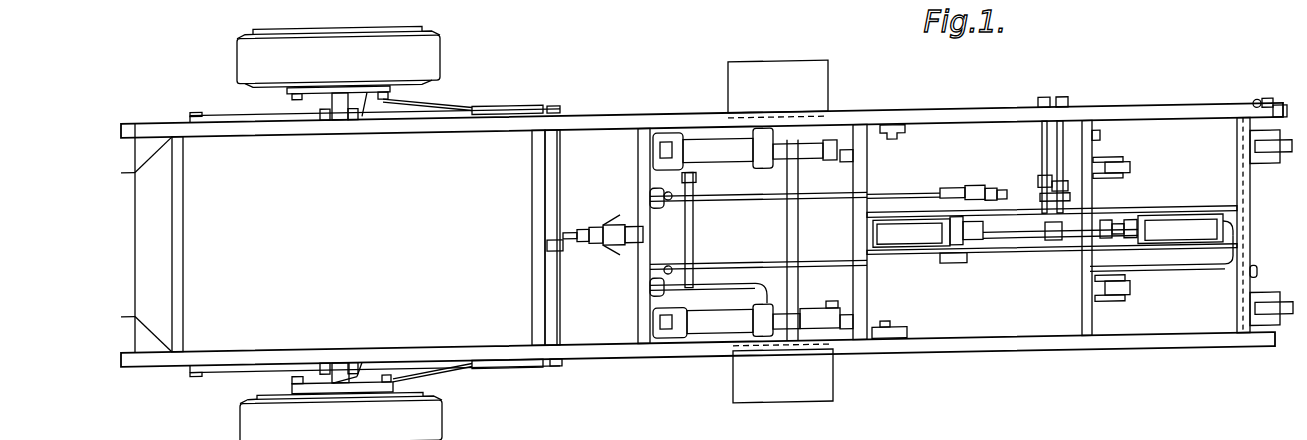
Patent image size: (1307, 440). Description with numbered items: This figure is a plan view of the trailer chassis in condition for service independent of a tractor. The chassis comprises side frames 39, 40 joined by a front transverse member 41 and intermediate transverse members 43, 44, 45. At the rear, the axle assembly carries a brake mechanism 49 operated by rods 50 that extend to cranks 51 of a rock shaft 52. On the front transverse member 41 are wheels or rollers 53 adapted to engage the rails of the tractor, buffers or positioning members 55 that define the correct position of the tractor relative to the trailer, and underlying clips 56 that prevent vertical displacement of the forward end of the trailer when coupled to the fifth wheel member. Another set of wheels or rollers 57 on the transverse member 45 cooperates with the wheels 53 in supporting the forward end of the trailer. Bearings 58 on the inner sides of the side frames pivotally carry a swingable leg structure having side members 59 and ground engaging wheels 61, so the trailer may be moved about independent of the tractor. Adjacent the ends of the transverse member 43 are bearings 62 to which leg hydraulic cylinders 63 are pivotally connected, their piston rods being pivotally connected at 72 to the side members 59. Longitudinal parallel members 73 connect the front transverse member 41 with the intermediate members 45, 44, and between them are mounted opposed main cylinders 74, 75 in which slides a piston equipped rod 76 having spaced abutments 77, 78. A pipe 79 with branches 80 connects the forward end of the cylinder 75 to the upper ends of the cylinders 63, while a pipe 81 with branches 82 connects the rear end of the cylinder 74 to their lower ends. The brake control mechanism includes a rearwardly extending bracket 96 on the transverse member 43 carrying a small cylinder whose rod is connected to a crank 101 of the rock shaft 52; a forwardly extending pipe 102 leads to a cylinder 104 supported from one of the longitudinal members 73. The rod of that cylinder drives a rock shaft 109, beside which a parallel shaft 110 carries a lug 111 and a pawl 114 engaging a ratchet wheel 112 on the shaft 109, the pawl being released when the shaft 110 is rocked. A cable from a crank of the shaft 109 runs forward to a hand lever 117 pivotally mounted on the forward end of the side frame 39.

The side frame 39 is at (590, 125).
The side frame 40 is at (612, 369).
The front transverse member 41 is at (1250, 250).
The intermediate transverse member 43 is at (645, 140).
The intermediate transverse member 44 is at (862, 140).
The intermediate transverse member 45 is at (1088, 140).
The brake mechanism 49 is at (366, 105).
The rods 50 is at (505, 116).
The cranks 51 is at (554, 116).
The rock shaft 52 is at (561, 318).
The wheels or rollers 53 is at (1282, 186).
The buffers or positioning members 55 is at (1257, 293).
The underlying clips 56 is at (958, 192).
The wheels or rollers 57 is at (1130, 188).
The bearings 58 is at (907, 348).
The side members 59 is at (846, 165).
The ground engaging wheels 61 is at (779, 75).
The bearings 62 is at (665, 145).
The leg hydraulic cylinders 63 is at (702, 152).
The pivotal connection 72 is at (830, 176).
The longitudinal parallel members 73 is at (1168, 228).
The main cylinder 74 is at (906, 262).
The main cylinder 75 is at (1185, 262).
The piston equipped rod 76 is at (995, 258).
The abutment 77 is at (1050, 260).
The abutment 78 is at (1112, 240).
The pipe 79 is at (1160, 292).
The branches 80 is at (692, 228).
The pipe 81 is at (818, 276).
The branches 82 is at (685, 250).
The bracket 96 is at (630, 238).
The crank 101 is at (560, 261).
The pipe 102 is at (900, 210).
The cylinder 104 is at (992, 206).
The rock shaft 109 is at (1100, 155).
The shaft 110 is at (573, 243).
The lug 111 is at (1044, 194).
The ratchet wheel 112 is at (1064, 116).
The pawl 114 is at (1038, 120).
The hand lever 117 is at (1268, 121).